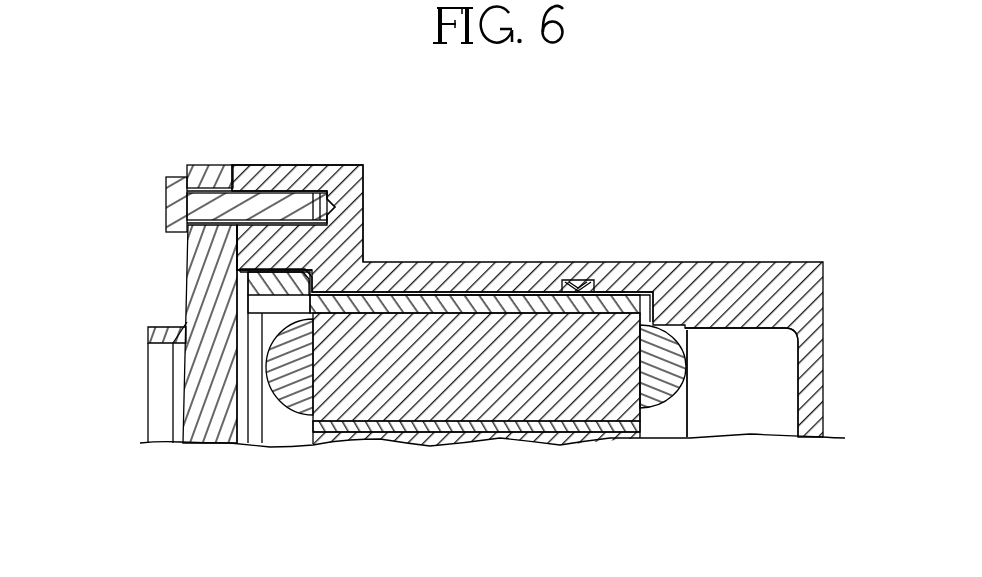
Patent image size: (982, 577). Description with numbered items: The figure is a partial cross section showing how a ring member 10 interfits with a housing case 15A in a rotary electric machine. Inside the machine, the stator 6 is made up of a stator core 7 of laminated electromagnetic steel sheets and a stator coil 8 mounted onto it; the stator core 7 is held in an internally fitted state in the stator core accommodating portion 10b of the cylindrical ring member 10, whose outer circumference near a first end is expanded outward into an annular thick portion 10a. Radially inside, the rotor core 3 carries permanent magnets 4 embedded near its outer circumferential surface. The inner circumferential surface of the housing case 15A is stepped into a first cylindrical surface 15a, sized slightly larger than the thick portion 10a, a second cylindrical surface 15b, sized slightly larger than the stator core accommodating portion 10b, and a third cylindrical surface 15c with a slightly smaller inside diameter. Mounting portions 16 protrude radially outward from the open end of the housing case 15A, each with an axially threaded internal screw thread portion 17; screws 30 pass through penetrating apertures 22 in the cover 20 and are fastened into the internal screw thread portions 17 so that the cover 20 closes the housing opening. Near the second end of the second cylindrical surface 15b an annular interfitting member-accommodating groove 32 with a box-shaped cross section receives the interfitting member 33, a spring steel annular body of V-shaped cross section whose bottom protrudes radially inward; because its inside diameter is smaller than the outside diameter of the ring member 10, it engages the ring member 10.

The rotor core 3 is at (388, 426).
The permanent magnets 4 is at (428, 439).
The stator 6 is at (669, 422).
The stator core 7 is at (607, 403).
The stator coil 8 is at (657, 406).
The ring member 10 is at (364, 321).
The thick portion 10a is at (312, 275).
The holder cylindrical portion 10b is at (447, 300).
The housing case 15A is at (511, 257).
The first cylindrical surface 15a is at (283, 222).
The second cylindrical surface 15b is at (510, 297).
The third cylindrical surface 15c is at (745, 322).
The mounting portions 16 is at (322, 180).
The internal screw thread portion 17 is at (340, 167).
The cover 20 is at (173, 311).
The penetrating apertures 22 is at (197, 163).
The screws 30 is at (180, 204).
The interfitting member-accommodating groove 32 is at (572, 282).
The interfitting member 33 is at (612, 288).